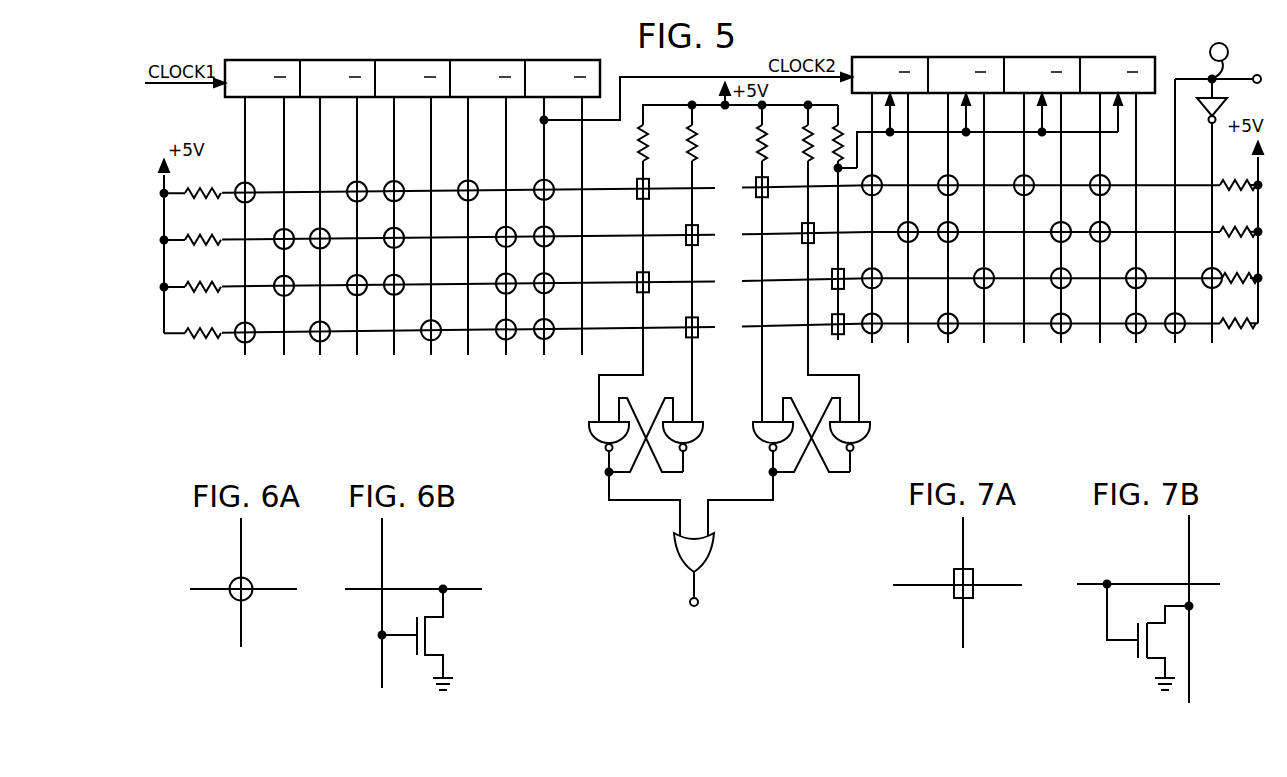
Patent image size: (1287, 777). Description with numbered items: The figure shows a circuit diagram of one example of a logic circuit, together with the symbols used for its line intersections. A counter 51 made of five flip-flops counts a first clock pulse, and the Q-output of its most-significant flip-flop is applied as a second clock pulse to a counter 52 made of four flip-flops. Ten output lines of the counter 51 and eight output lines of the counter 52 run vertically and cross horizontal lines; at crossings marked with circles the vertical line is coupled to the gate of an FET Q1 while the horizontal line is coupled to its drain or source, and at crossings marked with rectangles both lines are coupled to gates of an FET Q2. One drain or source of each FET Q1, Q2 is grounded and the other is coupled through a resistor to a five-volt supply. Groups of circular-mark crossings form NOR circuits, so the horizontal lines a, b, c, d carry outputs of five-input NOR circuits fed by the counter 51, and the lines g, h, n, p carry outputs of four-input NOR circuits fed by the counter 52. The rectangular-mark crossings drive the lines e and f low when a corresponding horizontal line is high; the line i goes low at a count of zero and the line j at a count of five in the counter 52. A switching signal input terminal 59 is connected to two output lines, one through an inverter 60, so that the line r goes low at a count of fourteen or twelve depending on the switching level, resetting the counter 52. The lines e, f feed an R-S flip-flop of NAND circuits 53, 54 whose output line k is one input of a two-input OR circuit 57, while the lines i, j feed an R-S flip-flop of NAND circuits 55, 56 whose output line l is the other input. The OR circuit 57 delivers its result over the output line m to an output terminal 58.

In FIG. 5, the counter 51 is at (394, 60).
In FIG. 5, the counter 52 is at (988, 57).
In FIG. 5, the NAND circuit 53 is at (590, 437).
In FIG. 5, the NAND circuit 54 is at (703, 423).
In FIG. 5, the NAND circuit 55 is at (754, 437).
In FIG. 5, the NAND circuit 56 is at (870, 423).
In FIG. 5, the 2-input OR circuit 57 is at (676, 554).
In FIG. 5, the output terminal 58 is at (690, 603).
In FIG. 5, the switching signal input terminal 59 is at (1258, 74).
In FIG. 5, the inverter 60 is at (1224, 106).
In FIG. 6B, the FET Q1 is at (432, 641).
In FIG. 7B, the FET Q2 is at (1130, 650).
In FIG. 5, the line a is at (715, 188).
In FIG. 5, the line b is at (715, 235).
In FIG. 5, the line c is at (715, 281).
In FIG. 5, the line d is at (715, 327).
In FIG. 5, the line e is at (643, 357).
In FIG. 5, the line f is at (692, 363).
In FIG. 5, the line g is at (742, 188).
In FIG. 5, the line h is at (742, 234).
In FIG. 5, the line i is at (762, 364).
In FIG. 5, the line j is at (859, 380).
In FIG. 5, the output line k is at (650, 500).
In FIG. 5, the output line l is at (728, 500).
In FIG. 5, the output line m is at (694, 585).
In FIG. 5, the line n is at (742, 281).
In FIG. 5, the line p is at (742, 326).
In FIG. 5, the line r is at (838, 340).